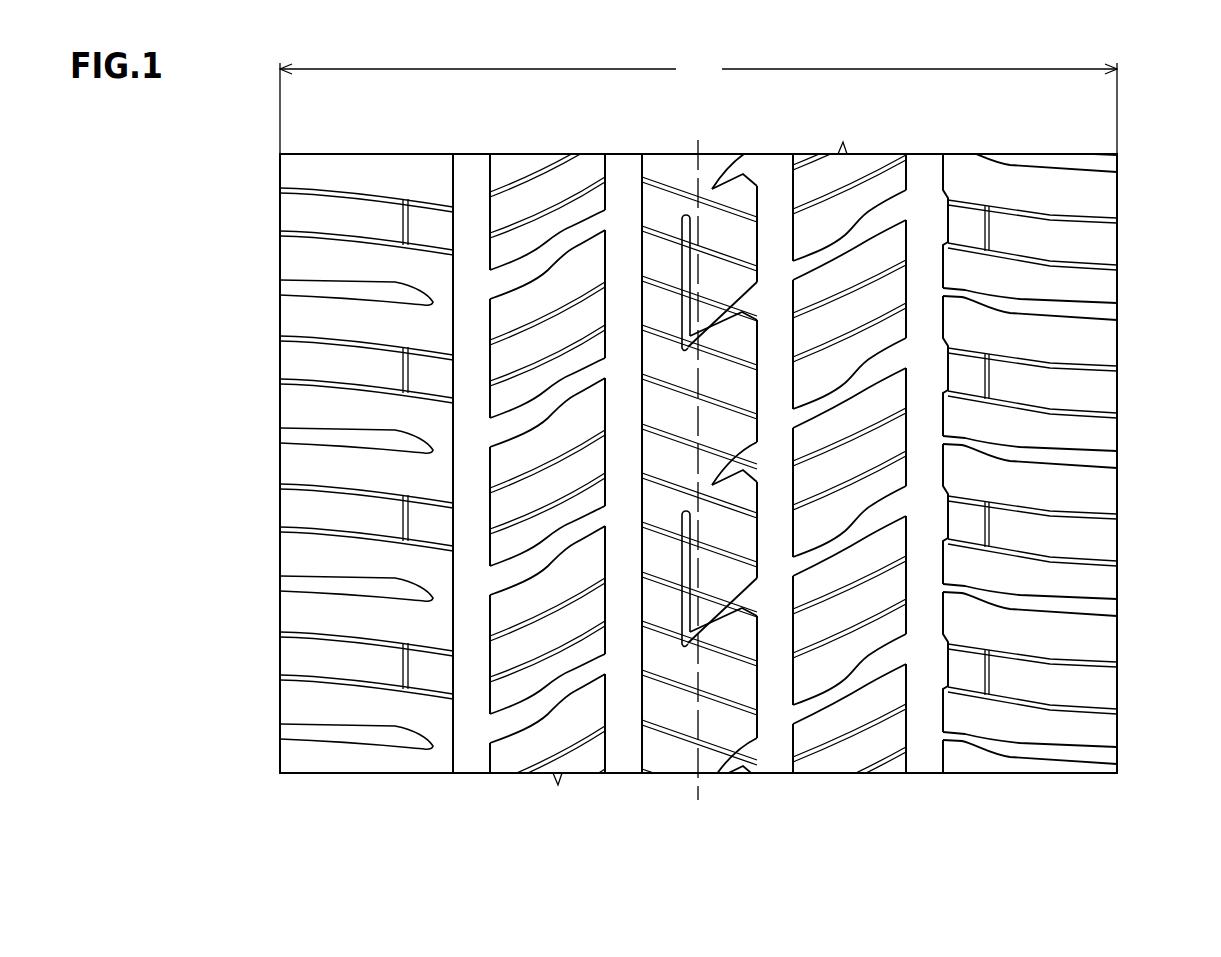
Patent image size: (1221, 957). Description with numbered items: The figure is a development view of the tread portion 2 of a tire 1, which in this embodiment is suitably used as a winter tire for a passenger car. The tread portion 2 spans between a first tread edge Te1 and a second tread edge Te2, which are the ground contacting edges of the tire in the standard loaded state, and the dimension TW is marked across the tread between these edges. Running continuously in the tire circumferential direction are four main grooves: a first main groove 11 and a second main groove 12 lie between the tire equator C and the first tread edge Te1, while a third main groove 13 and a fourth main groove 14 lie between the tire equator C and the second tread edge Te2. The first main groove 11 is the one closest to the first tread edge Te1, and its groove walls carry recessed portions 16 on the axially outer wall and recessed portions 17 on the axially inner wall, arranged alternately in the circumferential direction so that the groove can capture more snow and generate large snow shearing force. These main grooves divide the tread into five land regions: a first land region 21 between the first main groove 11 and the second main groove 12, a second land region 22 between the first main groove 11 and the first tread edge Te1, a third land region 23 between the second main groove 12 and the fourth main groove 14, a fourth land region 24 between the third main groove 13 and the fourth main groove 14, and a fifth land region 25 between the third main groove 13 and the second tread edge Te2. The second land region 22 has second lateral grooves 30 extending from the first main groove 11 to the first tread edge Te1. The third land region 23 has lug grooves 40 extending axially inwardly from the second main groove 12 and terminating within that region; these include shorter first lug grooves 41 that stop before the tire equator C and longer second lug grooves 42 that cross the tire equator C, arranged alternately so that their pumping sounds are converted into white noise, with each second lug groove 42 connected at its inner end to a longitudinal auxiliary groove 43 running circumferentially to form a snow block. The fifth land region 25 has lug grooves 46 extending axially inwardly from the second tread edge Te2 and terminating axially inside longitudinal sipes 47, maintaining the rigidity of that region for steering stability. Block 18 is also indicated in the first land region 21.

The tire 1 is at (961, 151).
The tread portion 2 is at (723, 151).
The first main groove 11 is at (922, 209).
The second main groove 12 is at (770, 209).
The third main groove 13 is at (468, 211).
The fourth main groove 14 is at (622, 199).
The recessed portions 16 is at (945, 225).
The recessed portions 17 is at (907, 426).
The block 18 is at (842, 688).
The first land region 21 is at (860, 199).
The second land region 22 is at (1020, 199).
The third land region 23 is at (662, 214).
The fourth land region 24 is at (548, 199).
The fifth land region 25 is at (358, 212).
The second lateral grooves 30 is at (1053, 461).
The lug grooves 40 is at (788, 833).
The first lug grooves 41 is at (733, 472).
The second lug grooves 42 is at (716, 622).
The longitudinal auxiliary groove 43 is at (686, 562).
The lug grooves 46 is at (340, 289).
The longitudinal sipes 47 is at (402, 372).
The tire equator C is at (698, 456).
The tread width TW is at (698, 69).
The first tread edge Te1 is at (1117, 192).
The second tread edge Te2 is at (280, 177).